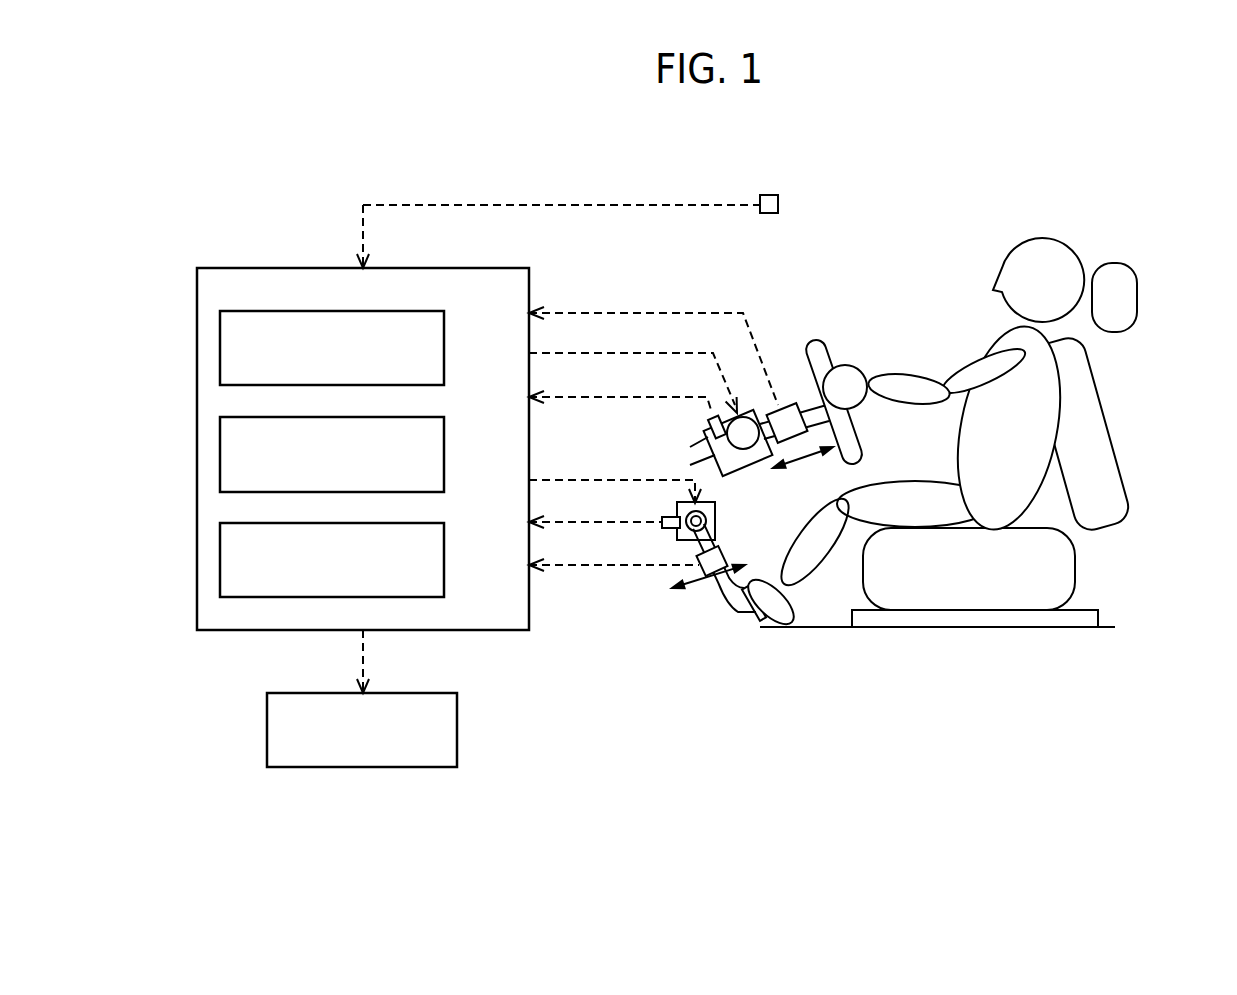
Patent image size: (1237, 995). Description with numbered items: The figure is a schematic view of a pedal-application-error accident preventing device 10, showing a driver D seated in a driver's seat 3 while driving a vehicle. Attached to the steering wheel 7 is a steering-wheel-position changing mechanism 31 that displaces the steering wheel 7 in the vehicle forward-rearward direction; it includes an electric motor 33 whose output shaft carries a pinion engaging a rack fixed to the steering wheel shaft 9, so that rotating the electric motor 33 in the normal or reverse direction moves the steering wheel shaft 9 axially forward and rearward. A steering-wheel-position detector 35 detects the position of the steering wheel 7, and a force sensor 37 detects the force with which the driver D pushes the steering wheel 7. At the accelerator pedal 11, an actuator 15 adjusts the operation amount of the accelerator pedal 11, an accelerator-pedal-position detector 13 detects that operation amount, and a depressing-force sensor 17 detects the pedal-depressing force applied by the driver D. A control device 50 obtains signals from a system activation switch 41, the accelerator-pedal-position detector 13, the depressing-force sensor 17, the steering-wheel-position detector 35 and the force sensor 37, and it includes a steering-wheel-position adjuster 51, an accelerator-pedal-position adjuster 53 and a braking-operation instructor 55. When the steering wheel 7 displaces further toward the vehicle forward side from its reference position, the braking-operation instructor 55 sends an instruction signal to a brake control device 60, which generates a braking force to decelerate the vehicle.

The driver's seat 3 is at (1142, 323).
The steering wheel 7 is at (814, 340).
The steering wheel shaft 9 is at (801, 410).
The pedal-application-error accident preventing device 10 is at (947, 693).
The accelerator pedal 11 is at (740, 613).
The accelerator-pedal-position detector 13 is at (664, 520).
The actuator 15 is at (712, 527).
The depressing-force sensor 17 is at (700, 560).
The steering-wheel-position changing mechanism 31 is at (737, 481).
The electric motor 33 is at (748, 447).
The steering-wheel-position detector 35 is at (709, 426).
The force sensor 37 is at (775, 408).
The system activation switch 41 is at (779, 204).
The control device 50 is at (469, 268).
The steering-wheel-position adjuster 51 is at (444, 353).
The accelerator-pedal-position adjuster 53 is at (444, 452).
The braking-operation instructor 55 is at (444, 556).
The brake control device 60 is at (457, 727).
The driver D is at (1053, 229).